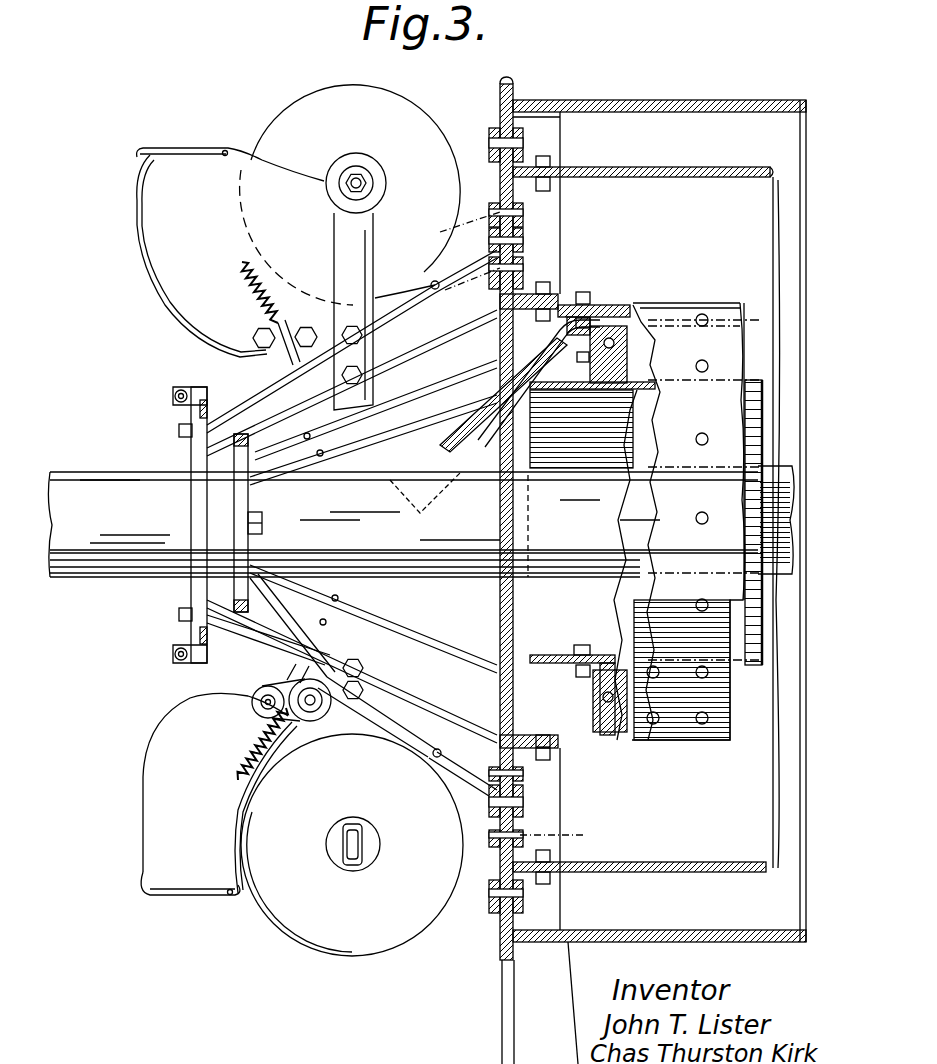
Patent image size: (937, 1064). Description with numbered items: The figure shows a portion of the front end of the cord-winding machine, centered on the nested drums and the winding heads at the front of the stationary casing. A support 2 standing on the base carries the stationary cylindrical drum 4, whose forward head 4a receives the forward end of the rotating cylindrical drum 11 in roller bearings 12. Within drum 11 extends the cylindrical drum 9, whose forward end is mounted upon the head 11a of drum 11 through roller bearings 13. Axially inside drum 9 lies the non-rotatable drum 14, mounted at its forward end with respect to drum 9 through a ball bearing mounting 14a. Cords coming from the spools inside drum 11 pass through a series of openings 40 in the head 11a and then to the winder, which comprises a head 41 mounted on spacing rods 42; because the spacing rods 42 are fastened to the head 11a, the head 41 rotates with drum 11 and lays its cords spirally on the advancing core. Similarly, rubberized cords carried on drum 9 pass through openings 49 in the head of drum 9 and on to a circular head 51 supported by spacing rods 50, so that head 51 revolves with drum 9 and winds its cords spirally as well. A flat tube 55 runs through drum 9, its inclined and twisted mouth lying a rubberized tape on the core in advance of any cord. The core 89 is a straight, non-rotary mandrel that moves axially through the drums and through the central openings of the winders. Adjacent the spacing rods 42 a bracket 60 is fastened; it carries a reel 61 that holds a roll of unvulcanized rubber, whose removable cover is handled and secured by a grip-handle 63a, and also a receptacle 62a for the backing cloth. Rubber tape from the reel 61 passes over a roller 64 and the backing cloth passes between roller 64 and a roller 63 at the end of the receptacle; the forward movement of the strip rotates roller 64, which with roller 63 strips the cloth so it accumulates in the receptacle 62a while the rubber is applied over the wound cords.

The support 2 is at (551, 1003).
The cylindrical drum 4 is at (668, 95).
The head of the drum 4a is at (514, 96).
The cylindrical drum 9 is at (632, 302).
The cylindrical drum 11 is at (708, 175).
The head of the drum 11a is at (536, 195).
The roller bearings 12 is at (522, 144).
The roller bearings 13 is at (518, 242).
The drum 14 is at (563, 645).
The ball bearing mounting 14a is at (628, 345).
The openings 40 is at (511, 525).
The head 41 is at (195, 390).
The spacing rods 42 is at (272, 398).
The openings 49 is at (578, 783).
The spacing rods 50 is at (432, 345).
The head 51 is at (256, 440).
The flat tube 55 is at (560, 336).
The bracket 60 is at (366, 700).
The reel 61 is at (350, 195).
The receptacle 62a is at (144, 219).
The roller 63 is at (258, 353).
The grip-handle 63a is at (364, 851).
The roller 64 is at (315, 680).
The core 89 is at (421, 521).